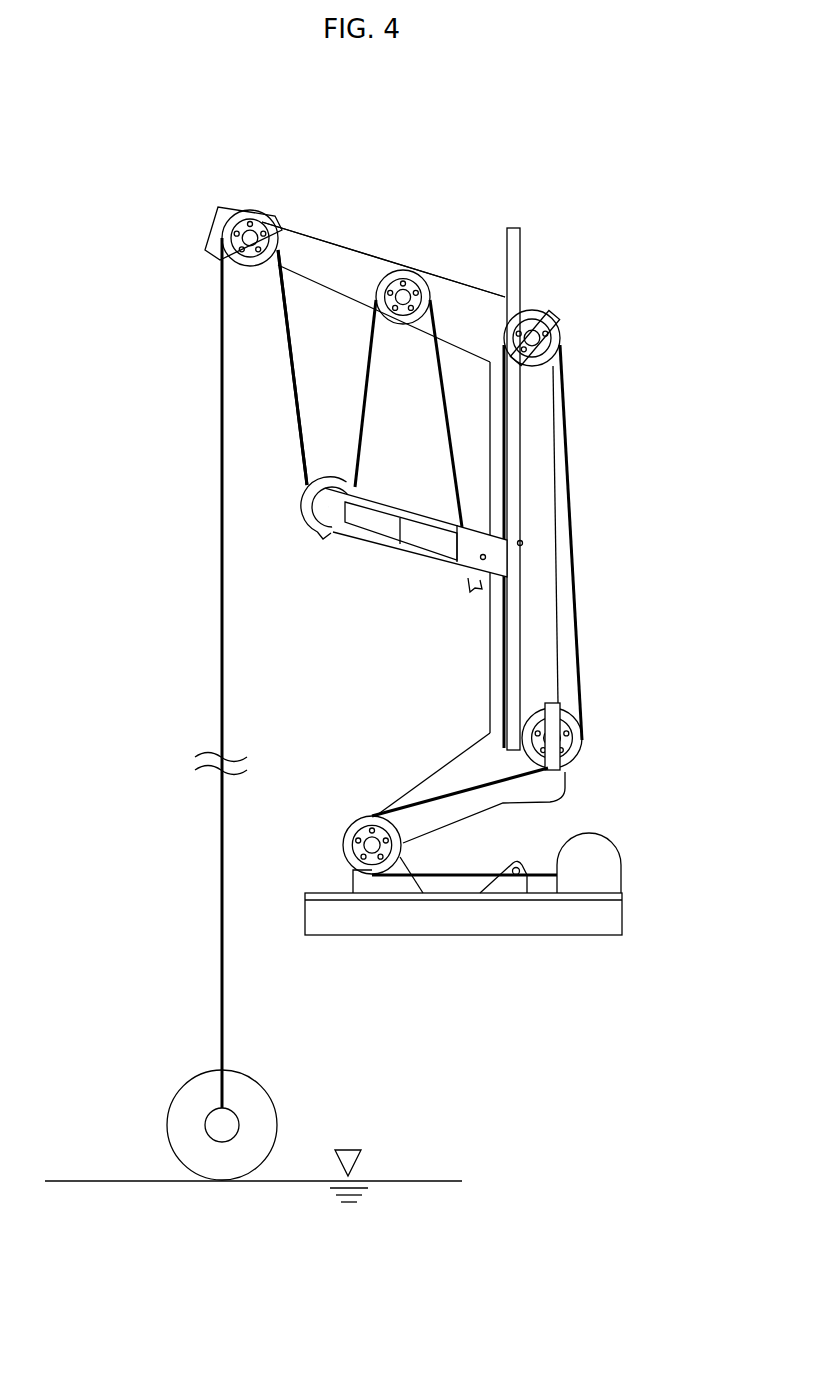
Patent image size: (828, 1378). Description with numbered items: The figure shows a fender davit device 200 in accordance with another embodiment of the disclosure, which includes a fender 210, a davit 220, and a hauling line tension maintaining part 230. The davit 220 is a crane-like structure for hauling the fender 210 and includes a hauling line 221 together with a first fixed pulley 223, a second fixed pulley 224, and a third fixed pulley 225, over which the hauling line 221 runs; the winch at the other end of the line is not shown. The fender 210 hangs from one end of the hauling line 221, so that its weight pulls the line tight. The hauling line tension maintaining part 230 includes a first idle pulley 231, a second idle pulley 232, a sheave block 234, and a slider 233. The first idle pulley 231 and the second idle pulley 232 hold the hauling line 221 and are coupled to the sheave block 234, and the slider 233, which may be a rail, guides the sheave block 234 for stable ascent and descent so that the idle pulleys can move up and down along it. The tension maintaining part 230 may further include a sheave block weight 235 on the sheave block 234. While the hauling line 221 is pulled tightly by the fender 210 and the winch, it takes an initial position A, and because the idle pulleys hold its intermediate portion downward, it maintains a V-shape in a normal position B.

The fender davit device 200 is at (700, 131).
The fender 210 is at (170, 1126).
The davit 220 is at (337, 292).
The hauling line 221 is at (220, 838).
The first fixed pulley 223 is at (542, 320).
The second fixed pulley 224 is at (404, 270).
The third fixed pulley 225 is at (250, 212).
The hauling line tension maintaining part 230 is at (303, 607).
The first idle pulley 231 is at (478, 583).
The second idle pulley 232 is at (335, 540).
The slider 233 is at (507, 700).
The sheave block 234 is at (405, 555).
The sheave block weight 235 is at (467, 555).
The initial position of the hauling line A is at (328, 242).
The normal position of the hauling line B is at (300, 423).